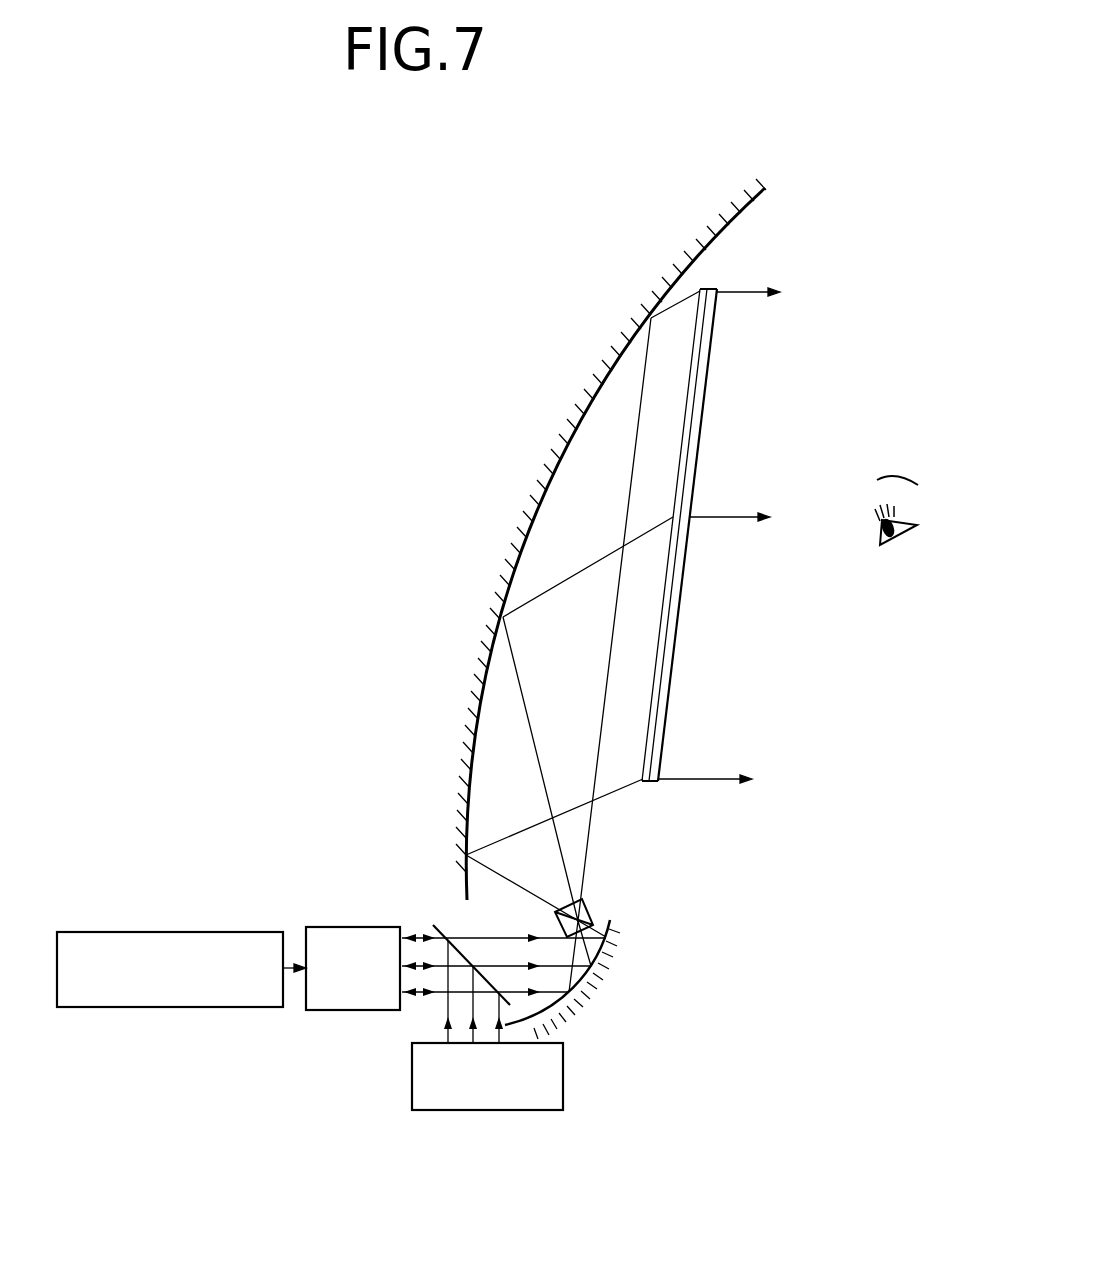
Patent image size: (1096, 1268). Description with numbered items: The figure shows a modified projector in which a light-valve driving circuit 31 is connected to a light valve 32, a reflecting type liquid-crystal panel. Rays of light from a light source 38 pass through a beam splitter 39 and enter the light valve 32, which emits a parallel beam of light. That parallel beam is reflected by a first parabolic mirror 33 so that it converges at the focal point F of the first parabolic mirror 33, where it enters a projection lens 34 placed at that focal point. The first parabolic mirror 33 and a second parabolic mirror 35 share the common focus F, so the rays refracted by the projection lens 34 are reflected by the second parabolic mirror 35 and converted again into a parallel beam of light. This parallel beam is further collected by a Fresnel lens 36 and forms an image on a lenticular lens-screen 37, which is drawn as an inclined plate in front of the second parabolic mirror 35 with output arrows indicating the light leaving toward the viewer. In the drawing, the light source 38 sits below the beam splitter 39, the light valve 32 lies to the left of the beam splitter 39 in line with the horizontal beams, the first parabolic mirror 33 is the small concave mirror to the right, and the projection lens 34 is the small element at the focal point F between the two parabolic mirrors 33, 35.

The light-valve driving circuit 31 is at (208, 932).
The light valve 32 is at (350, 927).
The first parabolic mirror 33 is at (588, 990).
The projection lens 34 is at (588, 902).
The second parabolic mirror 35 is at (470, 710).
The Fresnel lens 36 is at (640, 790).
The lenticular lens-screen 37 is at (655, 790).
The light source 38 is at (563, 1075).
The beam splitter 39 is at (437, 927).
The common focus F is at (588, 912).